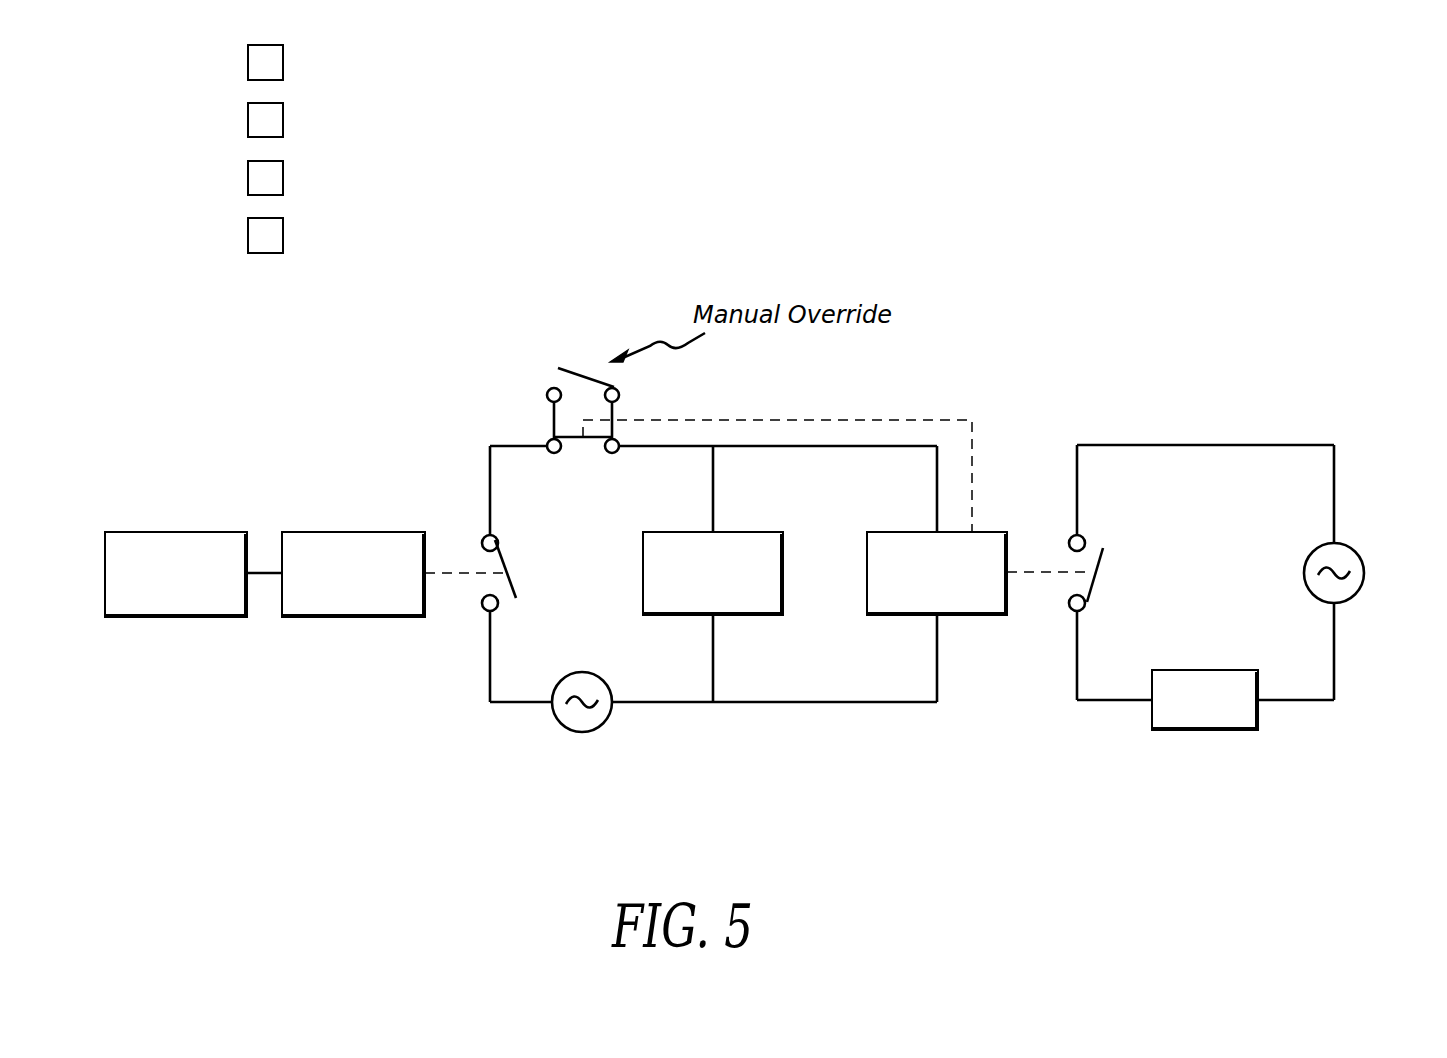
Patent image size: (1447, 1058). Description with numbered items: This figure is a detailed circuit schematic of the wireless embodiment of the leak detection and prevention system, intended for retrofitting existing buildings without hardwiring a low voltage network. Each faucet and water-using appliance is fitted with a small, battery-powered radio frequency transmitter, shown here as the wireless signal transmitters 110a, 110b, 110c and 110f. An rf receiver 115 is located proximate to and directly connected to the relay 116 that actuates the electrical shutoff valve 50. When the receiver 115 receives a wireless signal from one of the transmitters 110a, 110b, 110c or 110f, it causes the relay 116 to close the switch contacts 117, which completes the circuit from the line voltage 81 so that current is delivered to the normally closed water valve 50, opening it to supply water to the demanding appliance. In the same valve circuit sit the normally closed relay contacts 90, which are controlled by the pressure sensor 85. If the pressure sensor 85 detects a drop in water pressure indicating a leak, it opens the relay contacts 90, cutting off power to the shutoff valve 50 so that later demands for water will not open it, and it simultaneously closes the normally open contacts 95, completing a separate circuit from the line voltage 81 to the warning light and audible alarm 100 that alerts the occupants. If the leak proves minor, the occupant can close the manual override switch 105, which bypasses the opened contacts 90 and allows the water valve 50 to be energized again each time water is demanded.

The wireless signal transmitter 110a is at (283, 62).
The wireless signal transmitter 110b is at (283, 120).
The wireless signal transmitter 110c is at (283, 178).
The wireless signal transmitter 110f is at (283, 235).
The manual override switch 105 is at (588, 372).
The normally closed relay contacts 90 is at (558, 453).
The rf receiver 115 is at (138, 618).
The relay 116 is at (323, 618).
The switch contacts 117 is at (498, 608).
The line voltage 81 is at (590, 730).
The electrical shutoff valve 50 is at (750, 616).
The pressure sensor 85 is at (968, 616).
The normally open contacts 95 is at (1085, 606).
The warning light and audible alarm 100 is at (1210, 731).